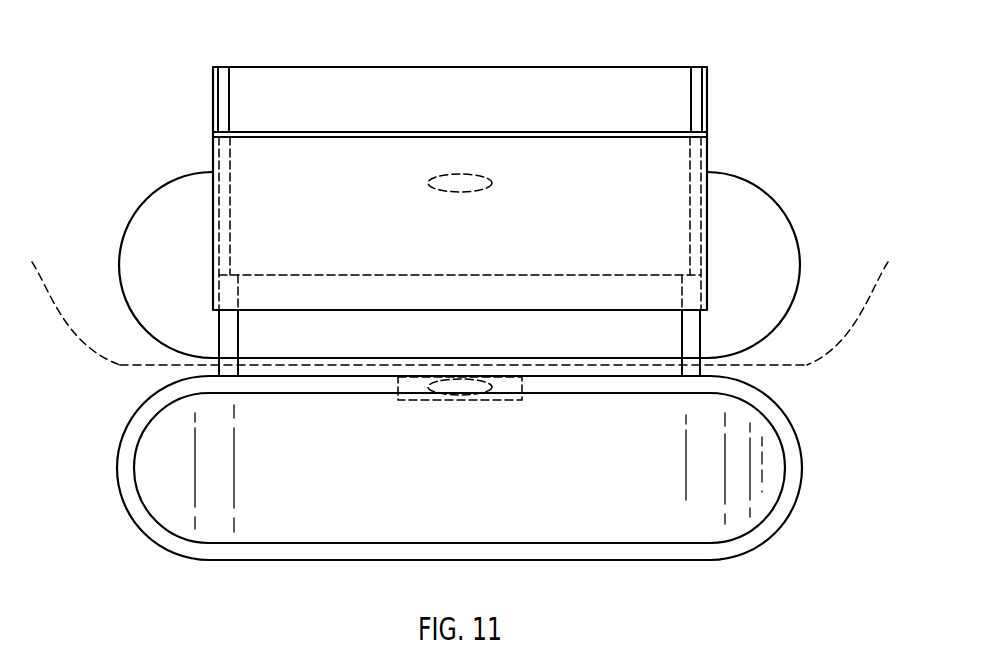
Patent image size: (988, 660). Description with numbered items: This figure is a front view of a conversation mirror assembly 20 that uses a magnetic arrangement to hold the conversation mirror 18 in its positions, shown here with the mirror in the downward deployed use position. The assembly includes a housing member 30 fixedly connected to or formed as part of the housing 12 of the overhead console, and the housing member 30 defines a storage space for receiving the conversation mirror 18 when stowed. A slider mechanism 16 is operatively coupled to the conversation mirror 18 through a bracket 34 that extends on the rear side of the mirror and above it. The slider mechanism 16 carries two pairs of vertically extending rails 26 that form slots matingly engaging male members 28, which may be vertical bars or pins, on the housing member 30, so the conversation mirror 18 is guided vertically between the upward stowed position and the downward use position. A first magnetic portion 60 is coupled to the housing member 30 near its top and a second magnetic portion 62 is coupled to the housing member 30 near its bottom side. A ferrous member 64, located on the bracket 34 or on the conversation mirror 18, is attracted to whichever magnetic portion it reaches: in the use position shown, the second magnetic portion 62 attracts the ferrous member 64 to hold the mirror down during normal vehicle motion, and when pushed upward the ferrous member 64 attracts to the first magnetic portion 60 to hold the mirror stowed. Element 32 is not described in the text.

The housing 12 is at (127, 367).
The slider mechanism 16 is at (670, 258).
The conversation mirror 18 is at (341, 486).
The conversation mirror assembly 20 is at (841, 411).
The vertically extending rails 26 is at (230, 333).
The male members 28 is at (231, 77).
The housing member 30 is at (213, 78).
The bulged side wall 32 is at (148, 243).
The bracket 34 is at (635, 325).
The first magnetic portion 60 is at (454, 183).
The second magnetic portion 62 is at (453, 385).
The ferrous member 64 is at (500, 400).